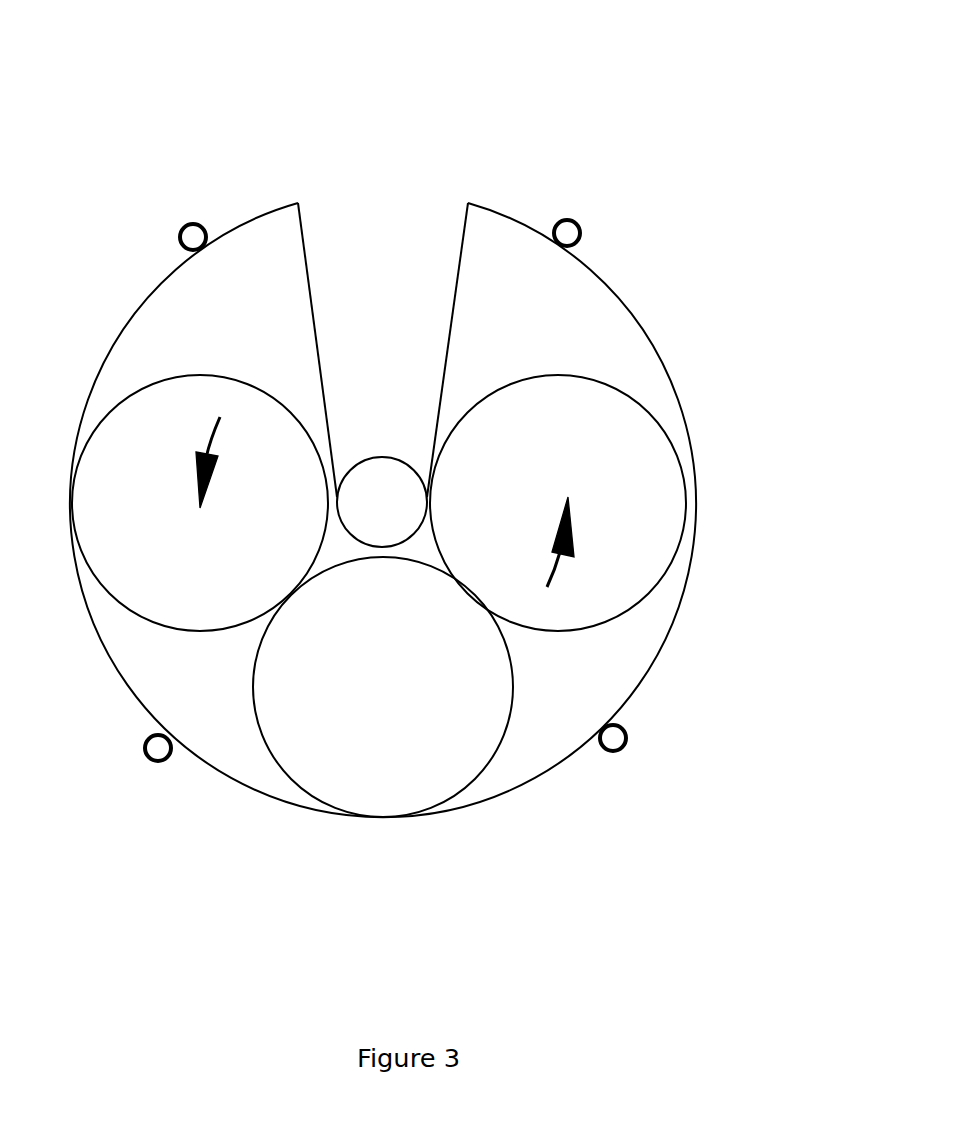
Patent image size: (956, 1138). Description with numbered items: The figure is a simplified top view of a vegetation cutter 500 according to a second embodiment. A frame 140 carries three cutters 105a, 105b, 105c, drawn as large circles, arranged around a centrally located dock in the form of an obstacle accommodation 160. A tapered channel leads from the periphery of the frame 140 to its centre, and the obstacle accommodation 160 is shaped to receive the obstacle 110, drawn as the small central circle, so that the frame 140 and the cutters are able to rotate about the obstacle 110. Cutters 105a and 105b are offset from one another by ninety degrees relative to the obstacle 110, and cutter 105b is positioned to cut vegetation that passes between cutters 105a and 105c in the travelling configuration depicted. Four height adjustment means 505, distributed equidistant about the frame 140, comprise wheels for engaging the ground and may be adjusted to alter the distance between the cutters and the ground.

The vegetation cutter 500 is at (682, 90).
The frame 140 is at (630, 318).
The obstacle 110 is at (382, 490).
The obstacle accommodation 160 is at (393, 267).
The cutter 105a is at (110, 533).
The cutter 105b is at (402, 783).
The cutter 105c is at (655, 513).
The height adjustment means 505 is at (188, 215).